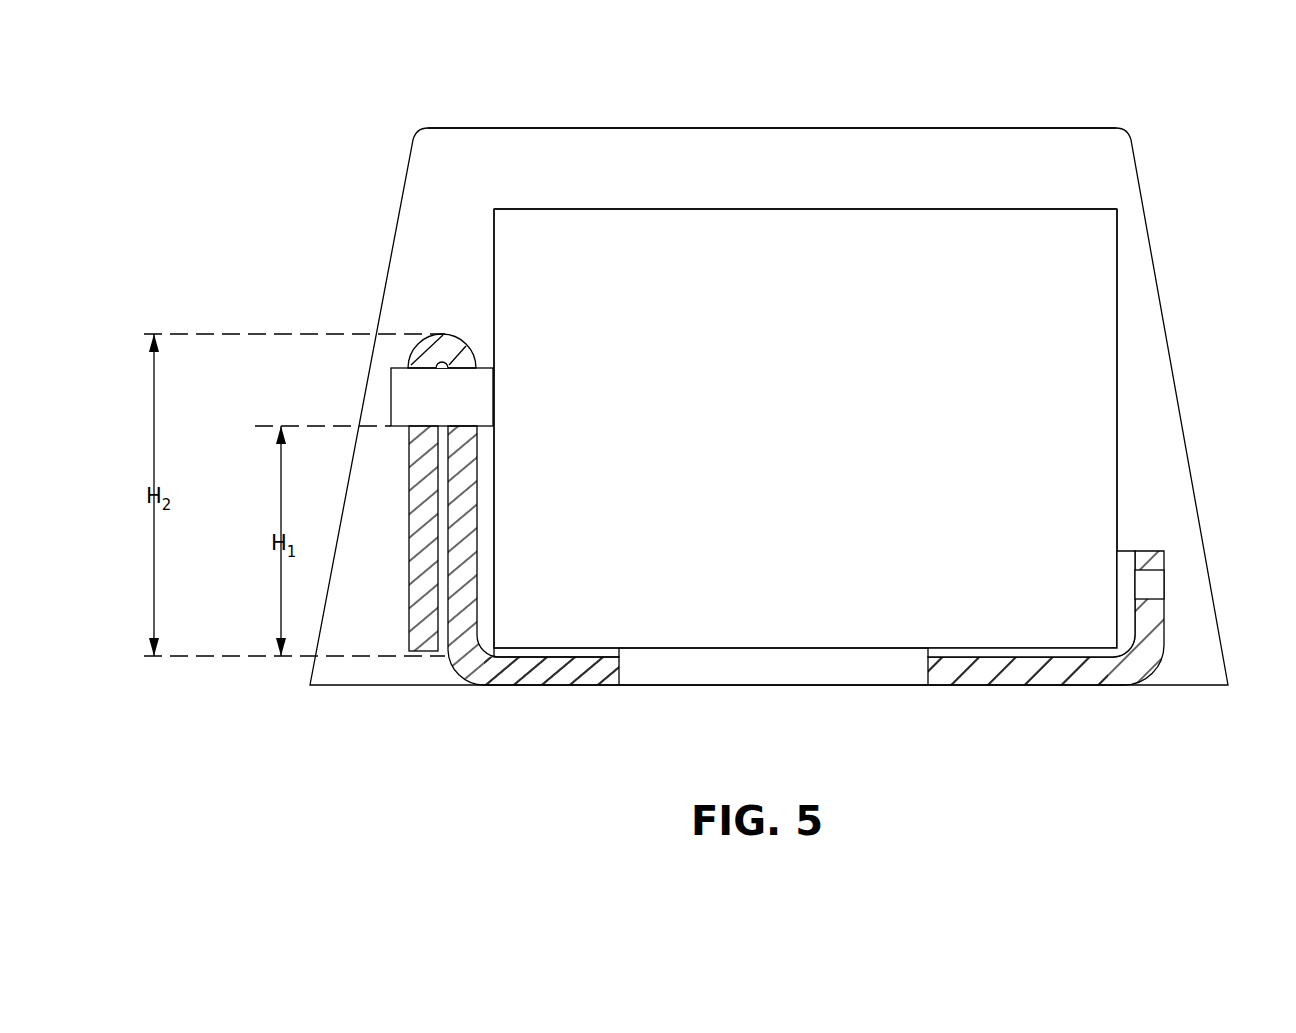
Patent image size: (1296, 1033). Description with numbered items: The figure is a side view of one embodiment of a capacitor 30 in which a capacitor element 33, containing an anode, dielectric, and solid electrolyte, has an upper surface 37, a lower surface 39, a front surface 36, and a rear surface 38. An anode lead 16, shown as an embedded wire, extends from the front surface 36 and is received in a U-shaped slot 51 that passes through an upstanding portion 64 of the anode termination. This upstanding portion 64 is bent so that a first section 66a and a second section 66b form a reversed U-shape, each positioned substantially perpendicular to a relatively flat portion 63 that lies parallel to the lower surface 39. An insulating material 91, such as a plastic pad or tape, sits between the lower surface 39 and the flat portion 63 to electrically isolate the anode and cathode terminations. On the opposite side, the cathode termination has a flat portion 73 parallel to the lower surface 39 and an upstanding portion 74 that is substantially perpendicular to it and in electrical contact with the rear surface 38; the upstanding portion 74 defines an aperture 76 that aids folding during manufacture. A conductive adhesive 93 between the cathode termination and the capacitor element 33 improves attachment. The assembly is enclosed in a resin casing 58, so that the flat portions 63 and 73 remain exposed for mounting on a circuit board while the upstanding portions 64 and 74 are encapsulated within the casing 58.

The capacitor 30 is at (1230, 261).
The resin casing 58 is at (650, 158).
The capacitor element 33 is at (798, 389).
The upper surface 37 is at (828, 209).
The front surface 36 is at (494, 272).
The rear surface 38 is at (1118, 446).
The lower surface 39 is at (782, 650).
The anode lead 16 is at (455, 408).
The slot 51 is at (480, 366).
The upstanding portion 64 is at (392, 500).
The first section 66a is at (418, 545).
The second section 66b is at (472, 489).
The flat portion 63 is at (583, 684).
The insulating material 91 is at (565, 647).
The upstanding portion 74 is at (1152, 620).
The flat portion 73 is at (1037, 685).
The conductive adhesive 93 is at (987, 648).
The aperture 76 is at (1132, 578).